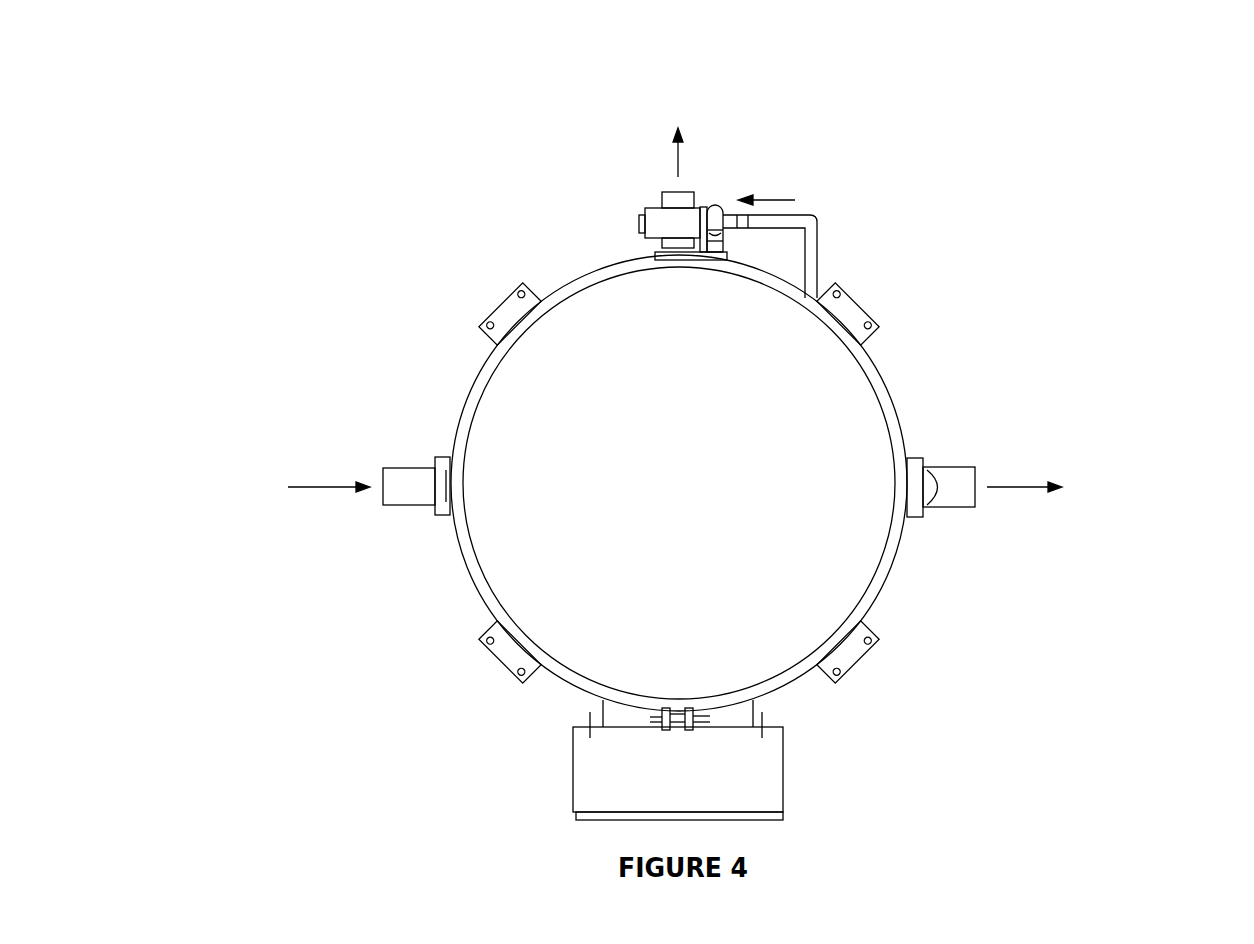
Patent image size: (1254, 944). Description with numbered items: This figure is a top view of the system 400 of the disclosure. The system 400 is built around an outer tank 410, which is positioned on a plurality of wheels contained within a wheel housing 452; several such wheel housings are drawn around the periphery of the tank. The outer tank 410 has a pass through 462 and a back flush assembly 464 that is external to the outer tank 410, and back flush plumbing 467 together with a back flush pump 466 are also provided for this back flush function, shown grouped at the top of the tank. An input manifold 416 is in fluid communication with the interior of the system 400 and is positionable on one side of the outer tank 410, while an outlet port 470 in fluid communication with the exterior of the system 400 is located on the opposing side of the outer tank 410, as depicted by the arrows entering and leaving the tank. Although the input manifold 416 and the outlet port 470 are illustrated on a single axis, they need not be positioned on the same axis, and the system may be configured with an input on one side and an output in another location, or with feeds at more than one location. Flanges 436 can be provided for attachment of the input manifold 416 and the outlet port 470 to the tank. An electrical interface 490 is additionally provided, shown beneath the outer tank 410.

The system 400 is at (1138, 112).
The outer tank 410 is at (472, 377).
The input manifold 416 is at (341, 546).
The flanges 436 is at (432, 511).
The wheel housing 452 is at (498, 670).
The pass through 462 is at (723, 242).
The back flush assembly 464 is at (727, 256).
The back flush pump 466 is at (640, 208).
The back flush plumbing 467 is at (820, 217).
The outlet port 470 is at (975, 493).
The electrical interface 490 is at (783, 745).